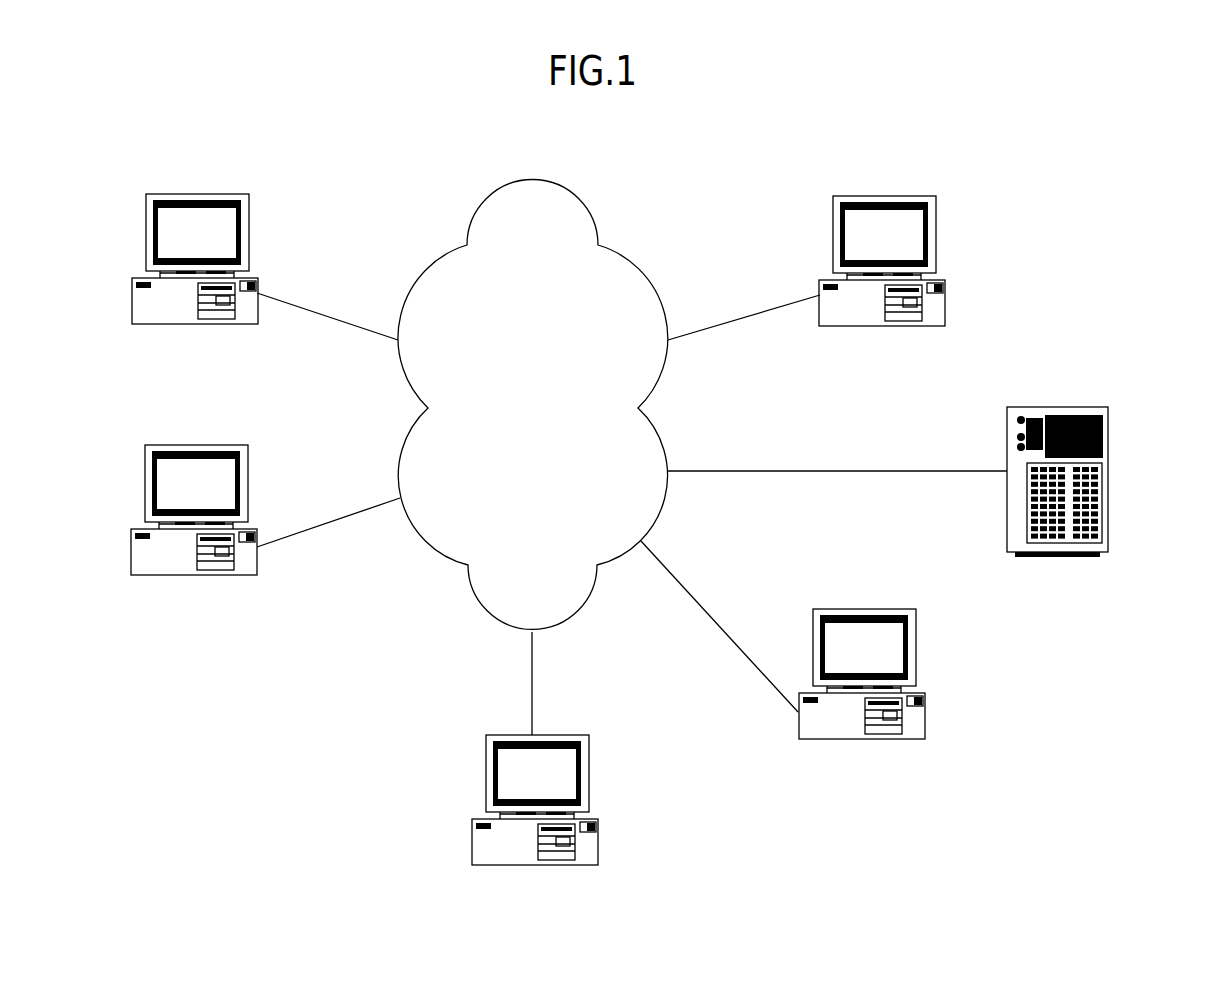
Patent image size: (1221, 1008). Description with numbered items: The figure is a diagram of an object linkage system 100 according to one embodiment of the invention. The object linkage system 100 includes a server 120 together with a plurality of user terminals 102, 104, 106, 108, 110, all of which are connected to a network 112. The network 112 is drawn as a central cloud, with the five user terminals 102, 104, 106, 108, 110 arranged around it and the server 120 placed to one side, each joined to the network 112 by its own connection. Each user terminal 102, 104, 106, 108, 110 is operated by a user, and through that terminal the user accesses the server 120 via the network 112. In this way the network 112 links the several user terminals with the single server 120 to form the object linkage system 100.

The object linkage system 100 is at (1093, 131).
The user terminal 102 is at (914, 261).
The user terminal 104 is at (227, 259).
The user terminal 106 is at (225, 510).
The user terminal 108 is at (566, 800).
The user terminal 110 is at (894, 674).
The network 112 is at (568, 405).
The server 120 is at (1101, 482).